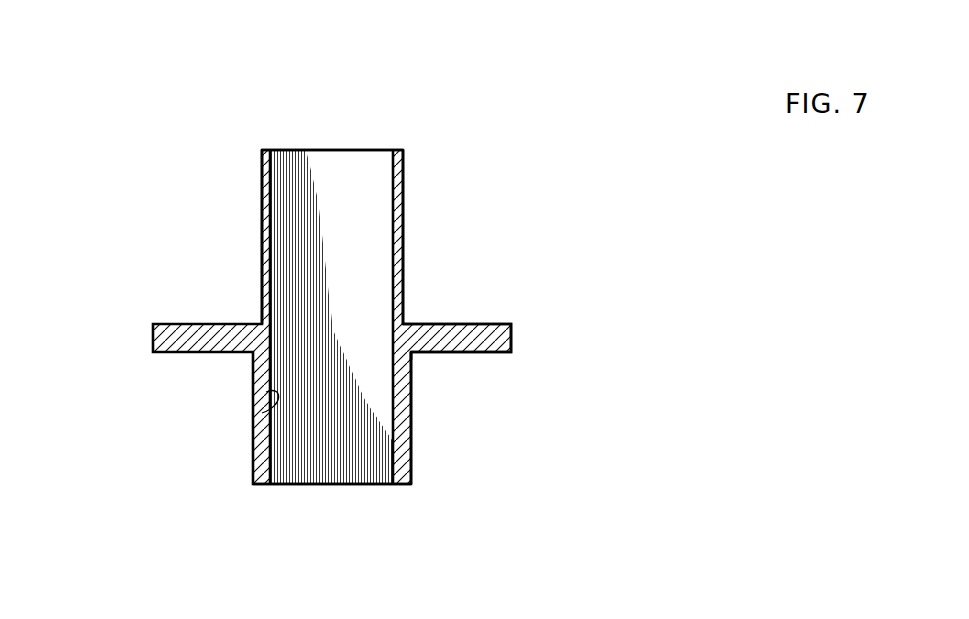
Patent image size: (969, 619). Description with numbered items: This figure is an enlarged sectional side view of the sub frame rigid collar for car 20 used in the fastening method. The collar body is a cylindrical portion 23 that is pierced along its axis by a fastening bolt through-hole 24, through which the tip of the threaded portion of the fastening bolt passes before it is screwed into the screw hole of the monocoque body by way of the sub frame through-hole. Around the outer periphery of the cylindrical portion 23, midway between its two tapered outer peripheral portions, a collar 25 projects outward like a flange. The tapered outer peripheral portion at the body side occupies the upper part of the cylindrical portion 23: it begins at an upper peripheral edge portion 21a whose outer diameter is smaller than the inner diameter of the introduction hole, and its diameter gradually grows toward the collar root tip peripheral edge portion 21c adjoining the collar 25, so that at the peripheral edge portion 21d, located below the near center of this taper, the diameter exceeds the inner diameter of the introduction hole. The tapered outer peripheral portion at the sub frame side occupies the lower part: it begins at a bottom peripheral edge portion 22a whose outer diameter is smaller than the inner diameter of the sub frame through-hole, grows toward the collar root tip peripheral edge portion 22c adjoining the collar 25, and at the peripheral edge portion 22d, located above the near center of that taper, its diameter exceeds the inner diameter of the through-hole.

The sub frame rigid collar for car 20 is at (218, 150).
The upper peripheral edge portion 21a is at (403, 148).
The peripheral edge portion 21d is at (404, 213).
The collar root tip peripheral edge portion 21c is at (404, 323).
The bottom peripheral edge portion 22a is at (370, 486).
The collar root tip peripheral edge portion 22c is at (413, 353).
The peripheral edge portion 22d is at (412, 415).
The cylindrical portion 23 is at (200, 290).
The fastening bolt through-hole 24 is at (262, 413).
The collar 25 is at (511, 332).